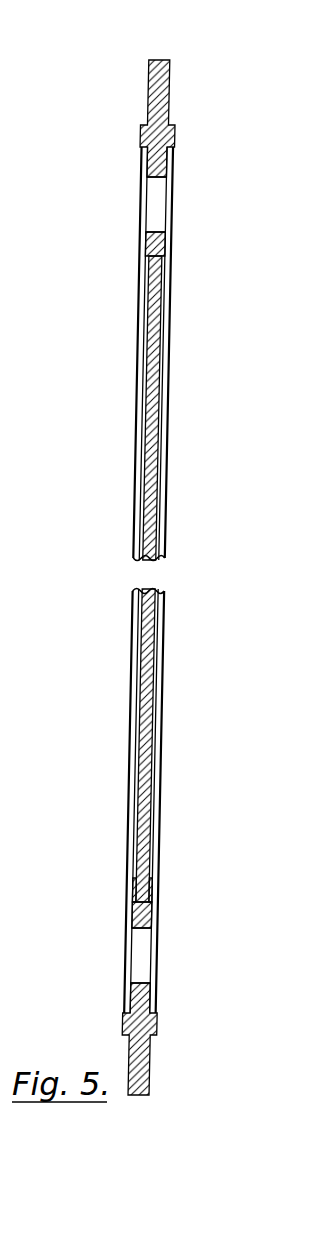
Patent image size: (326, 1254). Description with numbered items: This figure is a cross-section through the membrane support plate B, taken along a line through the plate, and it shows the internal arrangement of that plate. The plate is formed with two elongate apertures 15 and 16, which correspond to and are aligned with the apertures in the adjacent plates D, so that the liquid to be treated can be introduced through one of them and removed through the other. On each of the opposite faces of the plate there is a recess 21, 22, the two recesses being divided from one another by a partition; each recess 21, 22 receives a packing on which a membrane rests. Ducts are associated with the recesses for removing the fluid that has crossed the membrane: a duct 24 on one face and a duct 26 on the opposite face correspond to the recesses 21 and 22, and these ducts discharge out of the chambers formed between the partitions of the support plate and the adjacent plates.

The elongate aperture 15 is at (153, 197).
The elongate aperture 16 is at (145, 953).
The recess 21 is at (143, 492).
The recess 22 is at (157, 405).
The duct 24 is at (150, 893).
The duct 26 is at (135, 893).